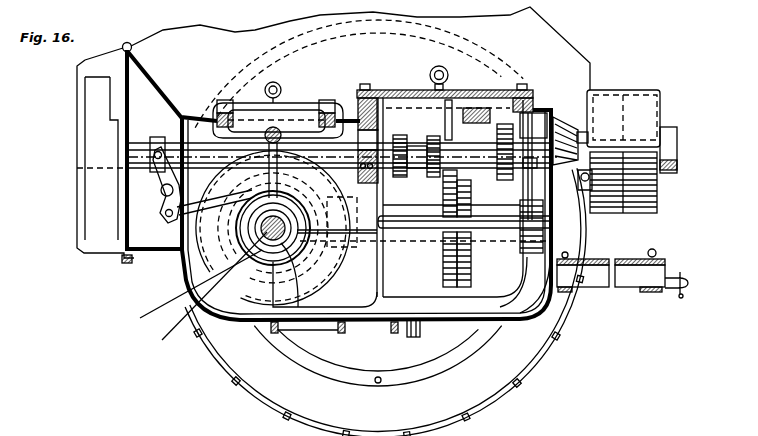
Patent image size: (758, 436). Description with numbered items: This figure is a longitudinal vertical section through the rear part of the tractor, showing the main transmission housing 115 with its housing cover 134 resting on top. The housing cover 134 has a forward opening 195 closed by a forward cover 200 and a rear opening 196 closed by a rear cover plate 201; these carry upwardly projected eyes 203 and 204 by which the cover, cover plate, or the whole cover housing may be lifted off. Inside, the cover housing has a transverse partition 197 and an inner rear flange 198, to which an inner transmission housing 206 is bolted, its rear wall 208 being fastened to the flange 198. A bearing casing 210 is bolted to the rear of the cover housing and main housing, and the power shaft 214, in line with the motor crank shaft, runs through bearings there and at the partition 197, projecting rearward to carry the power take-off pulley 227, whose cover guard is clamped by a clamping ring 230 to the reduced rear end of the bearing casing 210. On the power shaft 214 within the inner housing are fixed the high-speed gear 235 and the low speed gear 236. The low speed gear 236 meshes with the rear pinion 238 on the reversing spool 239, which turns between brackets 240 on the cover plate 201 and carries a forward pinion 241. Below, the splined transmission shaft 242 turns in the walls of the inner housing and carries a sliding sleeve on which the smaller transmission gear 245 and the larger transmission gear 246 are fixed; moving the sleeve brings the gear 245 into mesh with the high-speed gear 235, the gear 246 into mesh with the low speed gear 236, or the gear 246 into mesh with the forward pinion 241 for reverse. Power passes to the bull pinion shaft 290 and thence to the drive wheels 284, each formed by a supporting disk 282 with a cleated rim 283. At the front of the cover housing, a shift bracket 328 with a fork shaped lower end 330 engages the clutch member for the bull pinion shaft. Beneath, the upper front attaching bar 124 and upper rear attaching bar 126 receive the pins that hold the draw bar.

The main transmission housing 115 is at (532, 306).
The upper front attaching bar 124 is at (581, 262).
The upper rear attaching bar 126 is at (656, 251).
The housing cover 134 is at (570, 128).
The forward opening 195 is at (246, 112).
The rear opening 196 is at (488, 105).
The transverse partition 197 is at (358, 132).
The inner rear flange 198 is at (356, 152).
The forward cover 200 is at (292, 108).
The rear cover plate 201 is at (470, 95).
The eye 203 is at (284, 77).
The eye 204 is at (435, 92).
The inner transmission housing 206 is at (470, 286).
The rear wall 208 is at (468, 216).
The bearing casing 210 is at (570, 135).
The power shaft 214 is at (333, 152).
The power take-off pulley 227 is at (652, 198).
The clamping ring 230 is at (593, 212).
The high-speed gear 235 is at (522, 95).
The low speed gear 236 is at (430, 178).
The rear pinion 238 is at (428, 136).
The reversing spool 239 is at (438, 70).
The brackets 240 is at (397, 150).
The forward pinion 241 is at (400, 178).
The splined transmission shaft 242 is at (399, 228).
The smaller transmission gear 245 is at (484, 228).
The larger transmission gear 246 is at (443, 205).
The supporting disk 282 is at (516, 370).
The cleated rim 283 is at (222, 368).
The drive wheels 284 is at (241, 401).
The bull pinion shaft 290 is at (291, 270).
The shift bracket 328 is at (182, 293).
The fork shaped lower end 330 is at (205, 291).